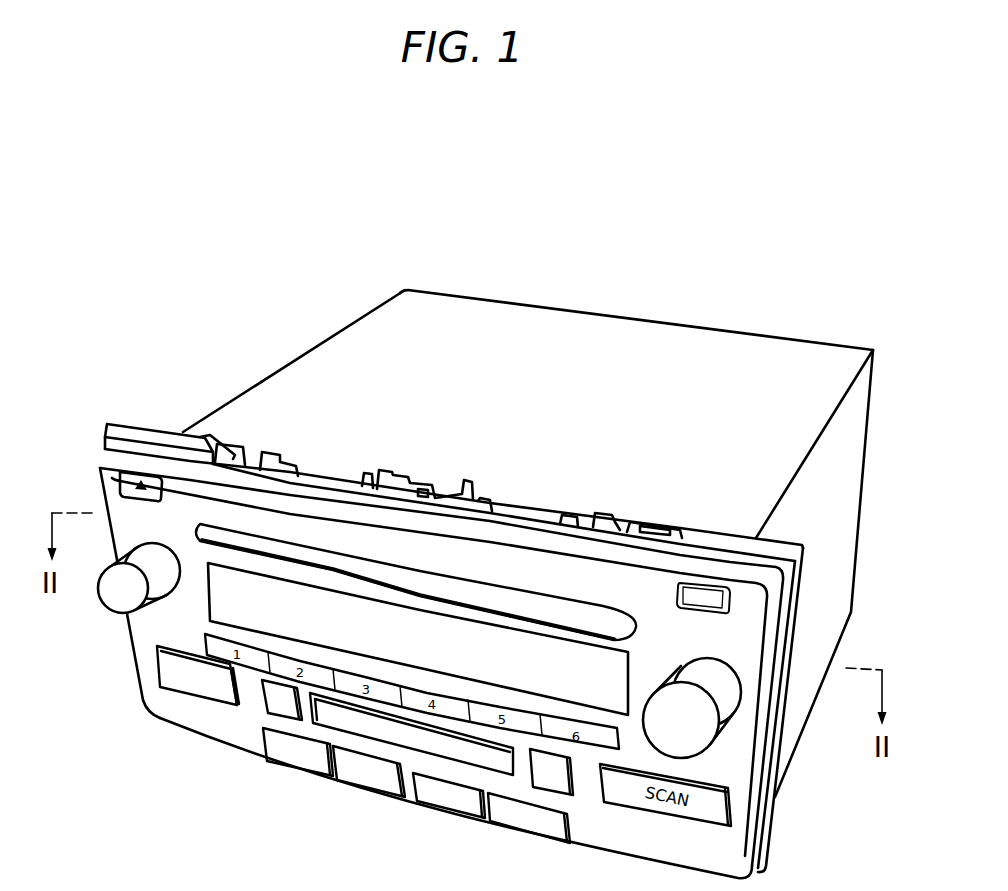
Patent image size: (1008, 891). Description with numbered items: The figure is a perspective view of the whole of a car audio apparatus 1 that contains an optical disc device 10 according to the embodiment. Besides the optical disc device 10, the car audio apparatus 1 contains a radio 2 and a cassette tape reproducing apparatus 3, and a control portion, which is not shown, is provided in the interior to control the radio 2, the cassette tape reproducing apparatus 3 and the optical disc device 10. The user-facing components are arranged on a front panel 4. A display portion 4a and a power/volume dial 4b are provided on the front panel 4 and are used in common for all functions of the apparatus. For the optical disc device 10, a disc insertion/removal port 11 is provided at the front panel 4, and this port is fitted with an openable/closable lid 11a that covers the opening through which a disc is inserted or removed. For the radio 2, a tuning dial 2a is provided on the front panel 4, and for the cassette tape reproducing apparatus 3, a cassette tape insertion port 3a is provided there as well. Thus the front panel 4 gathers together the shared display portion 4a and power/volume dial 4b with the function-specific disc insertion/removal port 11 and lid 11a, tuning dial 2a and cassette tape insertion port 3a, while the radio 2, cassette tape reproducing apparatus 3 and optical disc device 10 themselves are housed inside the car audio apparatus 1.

The car audio apparatus 1 is at (190, 355).
The radio 2 is at (742, 736).
The tuning dial 2a is at (697, 743).
The cassette tape reproducing apparatus 3 is at (253, 725).
The cassette tape insertion port 3a is at (383, 740).
The front panel 4 is at (734, 598).
The display portion 4a is at (485, 638).
The power/volume dial 4b is at (118, 601).
The optical disc device 10 is at (243, 579).
The disc insertion/removal port 11 is at (395, 590).
The openable/closable lid 11a is at (292, 556).